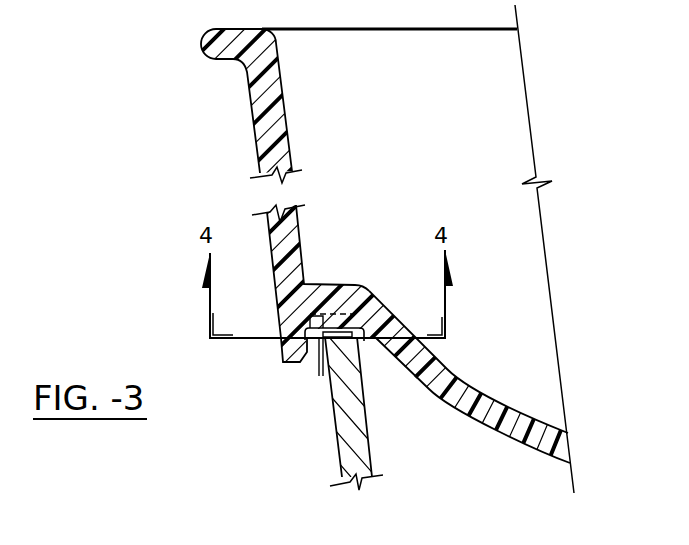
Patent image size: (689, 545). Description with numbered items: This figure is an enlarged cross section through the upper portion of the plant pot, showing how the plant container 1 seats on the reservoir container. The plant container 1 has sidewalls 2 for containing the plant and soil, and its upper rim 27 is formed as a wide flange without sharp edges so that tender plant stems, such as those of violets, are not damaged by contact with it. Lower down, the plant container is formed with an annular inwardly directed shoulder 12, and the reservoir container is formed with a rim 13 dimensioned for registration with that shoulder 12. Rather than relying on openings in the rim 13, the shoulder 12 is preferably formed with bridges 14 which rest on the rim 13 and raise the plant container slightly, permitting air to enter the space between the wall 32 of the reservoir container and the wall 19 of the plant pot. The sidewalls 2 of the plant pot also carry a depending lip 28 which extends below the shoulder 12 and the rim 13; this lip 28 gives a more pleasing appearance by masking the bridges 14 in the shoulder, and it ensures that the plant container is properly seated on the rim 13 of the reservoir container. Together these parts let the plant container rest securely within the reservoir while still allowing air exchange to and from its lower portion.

The plant container 1 is at (250, 116).
The sidewalls 2 is at (257, 157).
The rim 27 is at (201, 47).
The depending lip 28 is at (293, 362).
The wall 19 is at (476, 414).
The rim 13 is at (361, 322).
The bridges 14 is at (364, 339).
The shoulder 12 is at (318, 340).
The wall 32 is at (336, 437).